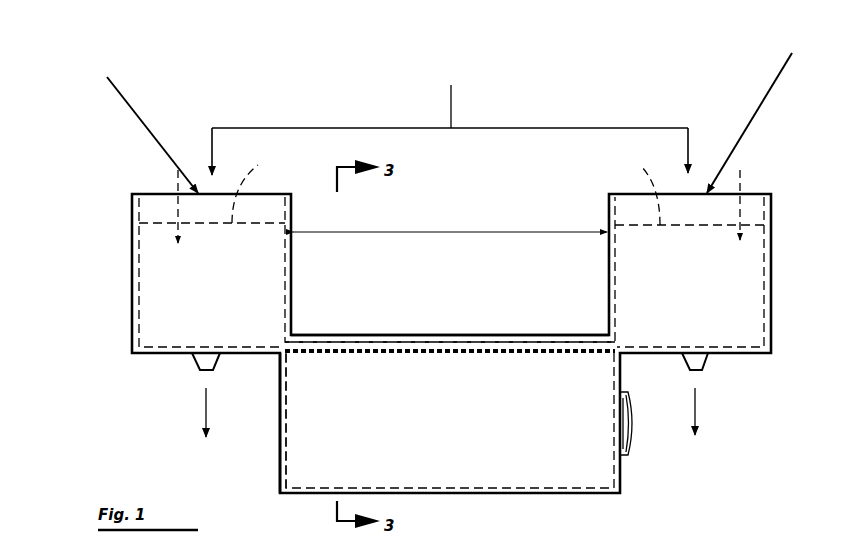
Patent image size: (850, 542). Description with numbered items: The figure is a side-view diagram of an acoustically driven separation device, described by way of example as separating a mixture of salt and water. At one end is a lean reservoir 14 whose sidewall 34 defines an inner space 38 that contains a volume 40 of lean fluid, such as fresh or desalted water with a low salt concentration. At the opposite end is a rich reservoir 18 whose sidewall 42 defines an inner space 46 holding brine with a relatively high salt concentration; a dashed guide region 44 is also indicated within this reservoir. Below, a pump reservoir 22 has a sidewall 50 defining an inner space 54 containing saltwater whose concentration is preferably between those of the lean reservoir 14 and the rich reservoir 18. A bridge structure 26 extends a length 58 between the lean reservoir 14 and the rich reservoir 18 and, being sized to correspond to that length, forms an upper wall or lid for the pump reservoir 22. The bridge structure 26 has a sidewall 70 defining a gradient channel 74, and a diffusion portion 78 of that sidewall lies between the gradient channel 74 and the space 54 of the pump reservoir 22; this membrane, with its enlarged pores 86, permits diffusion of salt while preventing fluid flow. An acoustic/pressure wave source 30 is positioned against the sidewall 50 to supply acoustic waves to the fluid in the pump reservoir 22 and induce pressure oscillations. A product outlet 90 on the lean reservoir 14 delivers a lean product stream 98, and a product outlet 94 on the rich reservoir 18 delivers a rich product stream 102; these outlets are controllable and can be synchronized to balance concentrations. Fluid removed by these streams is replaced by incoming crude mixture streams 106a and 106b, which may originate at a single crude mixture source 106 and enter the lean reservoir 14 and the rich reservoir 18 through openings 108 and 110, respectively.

The lean reservoir 14 is at (771, 290).
The rich reservoir 18 is at (132, 290).
The pump reservoir 22 is at (493, 493).
The bridge structure 26 is at (318, 335).
The acoustic/pressure wave source 30 is at (634, 437).
The sidewall 34 is at (764, 240).
The inner space 38 is at (740, 185).
The volume of lean fluid 40 is at (637, 189).
The sidewall 42 is at (132, 233).
The guide 44 is at (256, 188).
The inner space 46 is at (178, 185).
The sidewall 50 is at (280, 400).
The inner space 54 is at (296, 455).
The length 58 is at (352, 235).
The sidewall 70 is at (500, 342).
The gradient channel 74 is at (432, 351).
The diffusion portion 78 is at (545, 352).
The pores 86 is at (360, 352).
The product outlet 90 is at (708, 360).
The product outlet 94 is at (192, 360).
The lean product stream 98 is at (695, 404).
The rich product stream 102 is at (206, 408).
The crude mixture source 106 is at (451, 105).
The crude mixture stream 106a is at (688, 140).
The crude mixture stream 106b is at (212, 140).
The opening 108 is at (772, 289).
The opening 110 is at (150, 125).